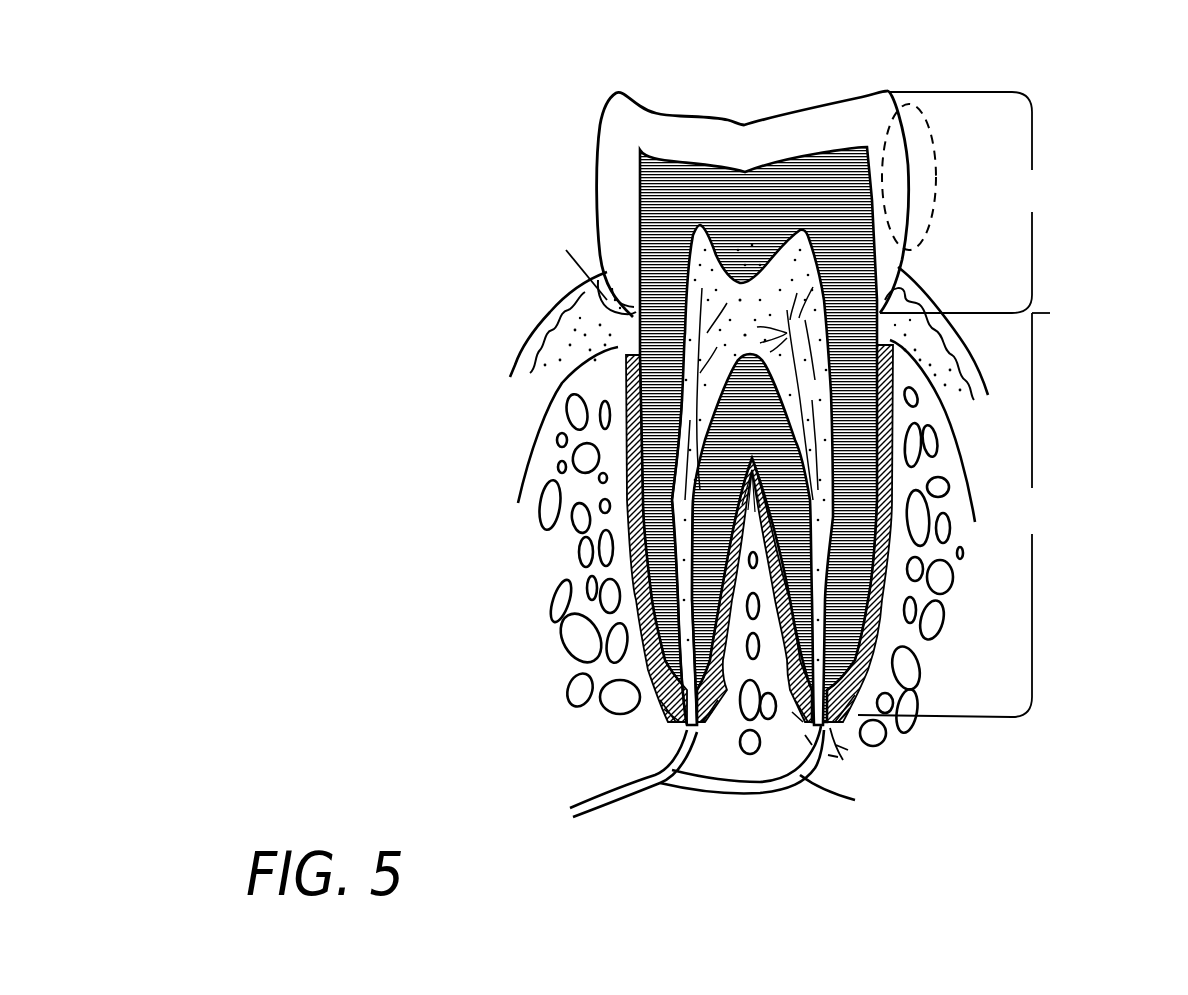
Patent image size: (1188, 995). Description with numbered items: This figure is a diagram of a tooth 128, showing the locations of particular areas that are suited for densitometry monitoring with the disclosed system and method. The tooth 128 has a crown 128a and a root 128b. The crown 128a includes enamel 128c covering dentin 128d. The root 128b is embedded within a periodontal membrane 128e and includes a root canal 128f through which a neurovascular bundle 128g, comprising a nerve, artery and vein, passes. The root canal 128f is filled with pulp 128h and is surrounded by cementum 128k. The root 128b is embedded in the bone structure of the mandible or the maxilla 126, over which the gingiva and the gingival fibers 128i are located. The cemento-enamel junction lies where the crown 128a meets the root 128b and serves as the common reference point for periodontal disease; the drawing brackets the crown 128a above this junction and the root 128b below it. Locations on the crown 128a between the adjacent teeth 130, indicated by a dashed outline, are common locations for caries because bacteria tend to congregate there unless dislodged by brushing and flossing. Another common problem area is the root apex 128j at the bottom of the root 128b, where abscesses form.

The tooth 128 is at (795, 377).
The crown 128a is at (1007, 202).
The root 128b is at (988, 515).
The enamel 128c is at (618, 112).
The dentin 128d is at (655, 185).
The periodontal membrane 128e is at (632, 552).
The root canal 128f is at (665, 467).
The neurovascular bundle 128g is at (597, 795).
The pulp 128h is at (740, 328).
The gingiva and gingival fibers 128i is at (563, 307).
The root apex 128j is at (850, 748).
The cementum 128k is at (640, 667).
The bone structure of the mandible or the maxilla 126 is at (557, 410).
The adjacent teeth 130 is at (922, 238).